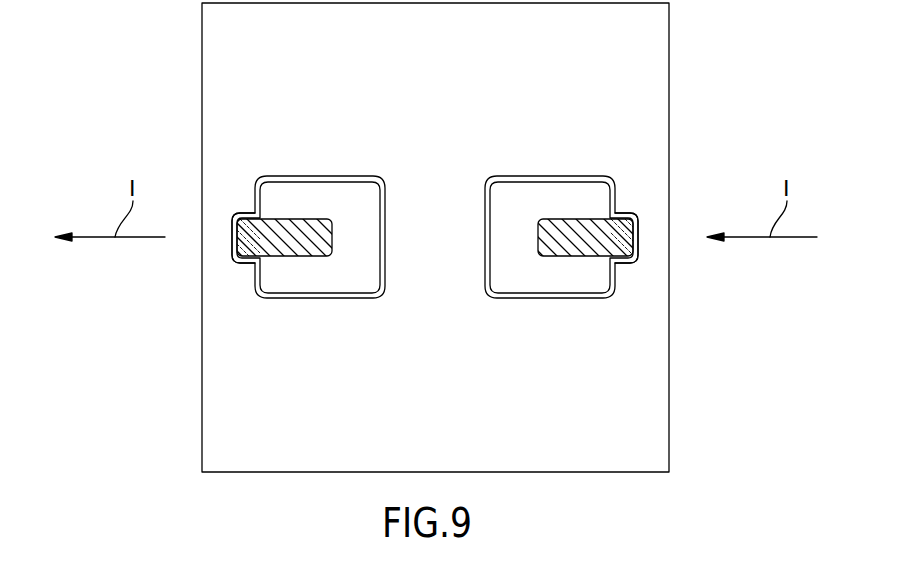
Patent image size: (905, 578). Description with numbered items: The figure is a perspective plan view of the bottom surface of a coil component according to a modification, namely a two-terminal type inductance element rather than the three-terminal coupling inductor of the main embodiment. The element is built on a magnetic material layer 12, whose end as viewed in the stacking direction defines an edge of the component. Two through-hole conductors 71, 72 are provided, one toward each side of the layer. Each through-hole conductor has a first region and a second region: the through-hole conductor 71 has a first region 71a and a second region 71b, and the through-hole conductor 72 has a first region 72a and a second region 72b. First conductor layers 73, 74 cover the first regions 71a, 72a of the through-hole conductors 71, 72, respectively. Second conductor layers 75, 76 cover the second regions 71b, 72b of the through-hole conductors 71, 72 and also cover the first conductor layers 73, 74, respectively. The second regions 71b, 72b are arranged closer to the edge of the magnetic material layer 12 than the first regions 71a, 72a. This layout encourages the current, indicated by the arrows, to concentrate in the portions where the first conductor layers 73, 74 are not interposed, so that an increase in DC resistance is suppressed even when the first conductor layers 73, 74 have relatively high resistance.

The magnetic material layer 12 is at (655, 47).
The through-hole conductor 71 is at (295, 227).
The first region 71a is at (313, 230).
The second region 71b is at (252, 228).
The through-hole conductor 72 is at (573, 228).
The first region 72a is at (642, 126).
The second region 72b is at (625, 228).
The first conductor layer 73 is at (312, 294).
The first conductor layer 74 is at (555, 295).
The second conductor layer 75 is at (360, 299).
The second conductor layer 76 is at (505, 299).